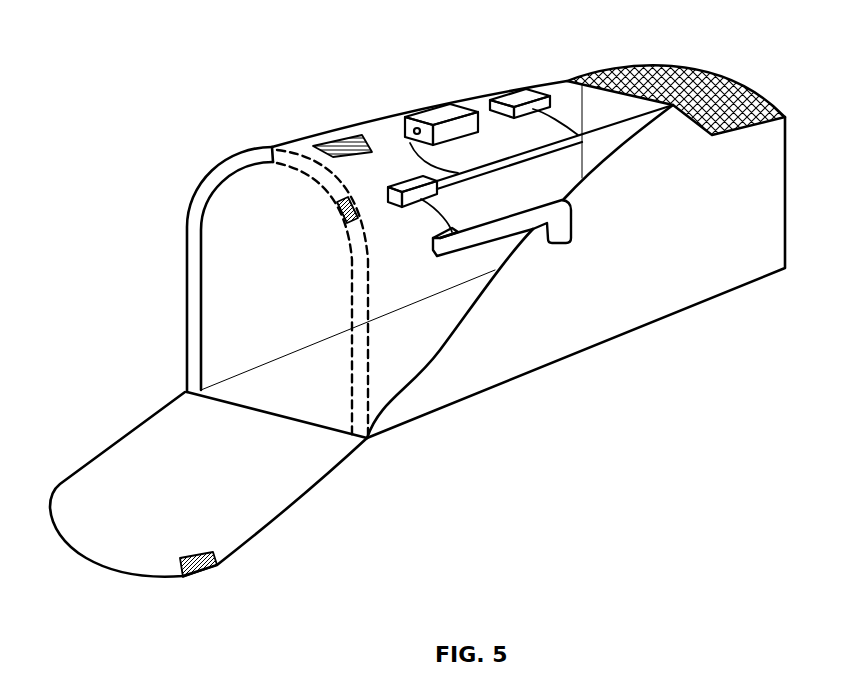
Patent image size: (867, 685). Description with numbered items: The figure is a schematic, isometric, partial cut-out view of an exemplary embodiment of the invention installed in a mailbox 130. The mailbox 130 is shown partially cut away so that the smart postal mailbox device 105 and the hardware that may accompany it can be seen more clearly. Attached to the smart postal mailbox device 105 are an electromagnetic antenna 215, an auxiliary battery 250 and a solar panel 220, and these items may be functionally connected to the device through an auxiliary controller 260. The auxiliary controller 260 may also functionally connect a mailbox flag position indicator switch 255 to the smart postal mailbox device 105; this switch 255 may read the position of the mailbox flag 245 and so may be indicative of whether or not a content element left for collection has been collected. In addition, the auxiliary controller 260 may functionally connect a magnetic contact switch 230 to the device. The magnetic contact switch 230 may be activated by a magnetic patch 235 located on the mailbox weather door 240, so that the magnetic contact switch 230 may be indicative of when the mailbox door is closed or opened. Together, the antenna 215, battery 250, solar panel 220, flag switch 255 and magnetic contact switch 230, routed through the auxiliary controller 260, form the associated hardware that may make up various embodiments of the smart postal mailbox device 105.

The smart postal mailbox device 105 is at (433, 108).
The mailbox 130 is at (731, 293).
The electromagnetic antenna 215 is at (337, 133).
The solar panel 220 is at (713, 65).
The magnetic contact switch 230 is at (343, 212).
The magnetic patch 235 is at (213, 568).
The mailbox weather door 240 is at (135, 430).
The mailbox flag 245 is at (558, 243).
The auxiliary battery 250 is at (520, 86).
The mailbox flag position indicator switch 255 is at (437, 255).
The auxiliary controller 260 is at (403, 177).